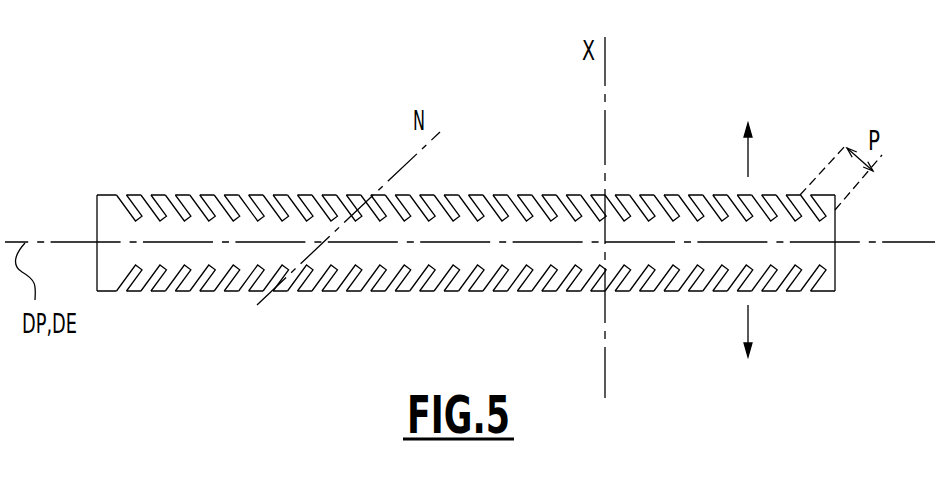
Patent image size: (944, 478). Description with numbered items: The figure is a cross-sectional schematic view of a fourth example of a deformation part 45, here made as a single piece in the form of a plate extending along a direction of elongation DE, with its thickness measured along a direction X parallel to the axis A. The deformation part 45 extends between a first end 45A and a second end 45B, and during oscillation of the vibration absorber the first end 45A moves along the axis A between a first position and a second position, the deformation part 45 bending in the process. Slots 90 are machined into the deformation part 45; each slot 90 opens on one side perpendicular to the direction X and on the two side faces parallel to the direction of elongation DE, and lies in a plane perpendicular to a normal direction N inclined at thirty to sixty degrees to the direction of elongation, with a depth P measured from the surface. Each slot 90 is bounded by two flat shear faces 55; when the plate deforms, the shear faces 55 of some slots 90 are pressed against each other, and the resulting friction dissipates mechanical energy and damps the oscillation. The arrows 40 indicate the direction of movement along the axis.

The deformation part 45 is at (461, 191).
The first end 45A is at (876, 294).
The second end 45B is at (76, 198).
The slot 90 is at (150, 181).
The shear face 55 is at (235, 189).
The direction of displacement 40 is at (761, 240).